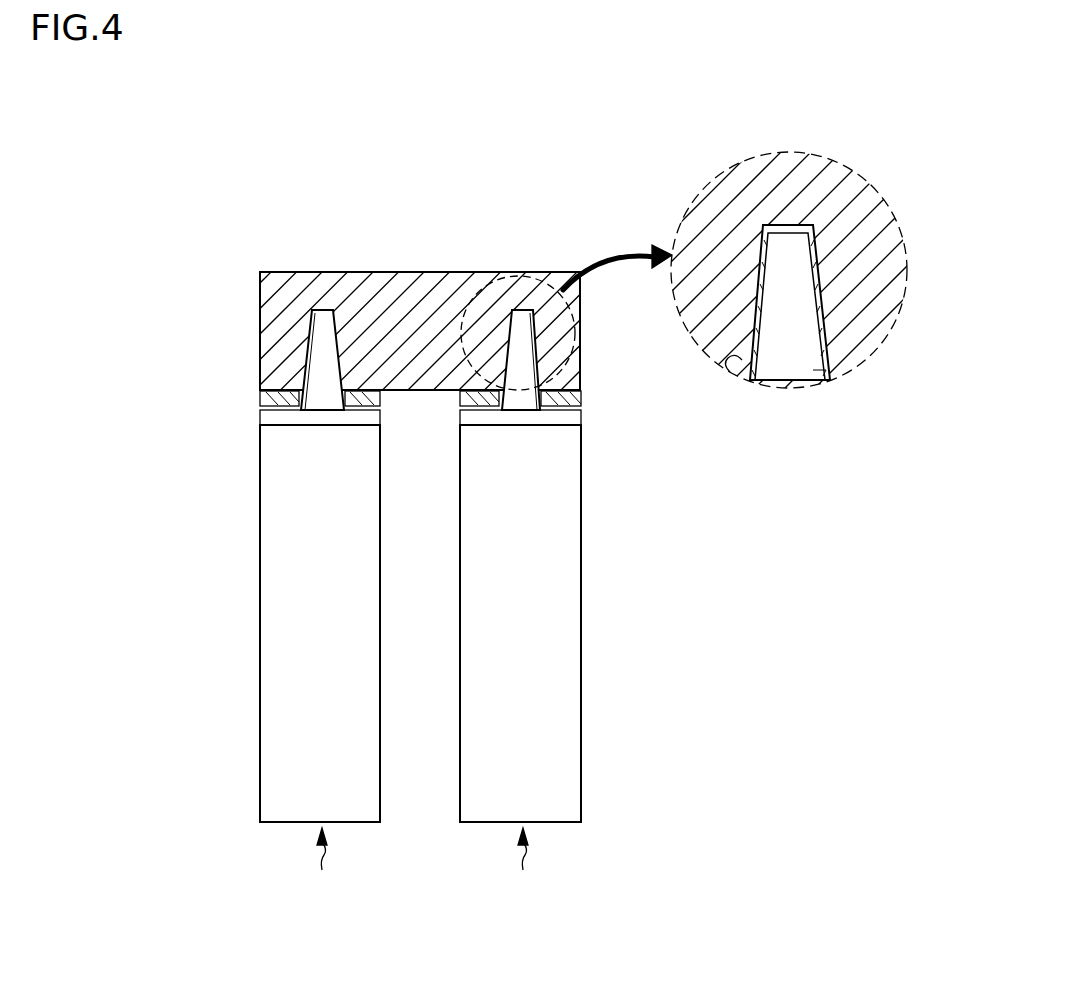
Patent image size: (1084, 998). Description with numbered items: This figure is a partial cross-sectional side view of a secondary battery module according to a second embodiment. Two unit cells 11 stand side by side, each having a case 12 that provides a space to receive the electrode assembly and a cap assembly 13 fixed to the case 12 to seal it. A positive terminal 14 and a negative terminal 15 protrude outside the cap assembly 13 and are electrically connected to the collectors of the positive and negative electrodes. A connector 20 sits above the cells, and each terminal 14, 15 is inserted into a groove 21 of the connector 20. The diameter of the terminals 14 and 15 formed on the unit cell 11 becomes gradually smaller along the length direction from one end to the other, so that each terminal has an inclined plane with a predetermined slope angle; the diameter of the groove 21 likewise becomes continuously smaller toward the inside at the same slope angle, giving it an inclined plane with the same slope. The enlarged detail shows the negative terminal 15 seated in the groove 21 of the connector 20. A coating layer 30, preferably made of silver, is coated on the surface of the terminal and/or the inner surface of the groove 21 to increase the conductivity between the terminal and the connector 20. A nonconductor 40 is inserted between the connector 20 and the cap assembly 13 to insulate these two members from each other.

The unit cell 11 is at (421, 866).
The case 12 is at (258, 601).
The cap assembly 13 is at (276, 418).
The positive terminal 14 is at (312, 310).
The negative terminal 15 is at (518, 320).
The connector 20 is at (412, 292).
The groove 21 is at (334, 312).
The coating layer 30 is at (748, 360).
The nonconductor 40 is at (268, 402).